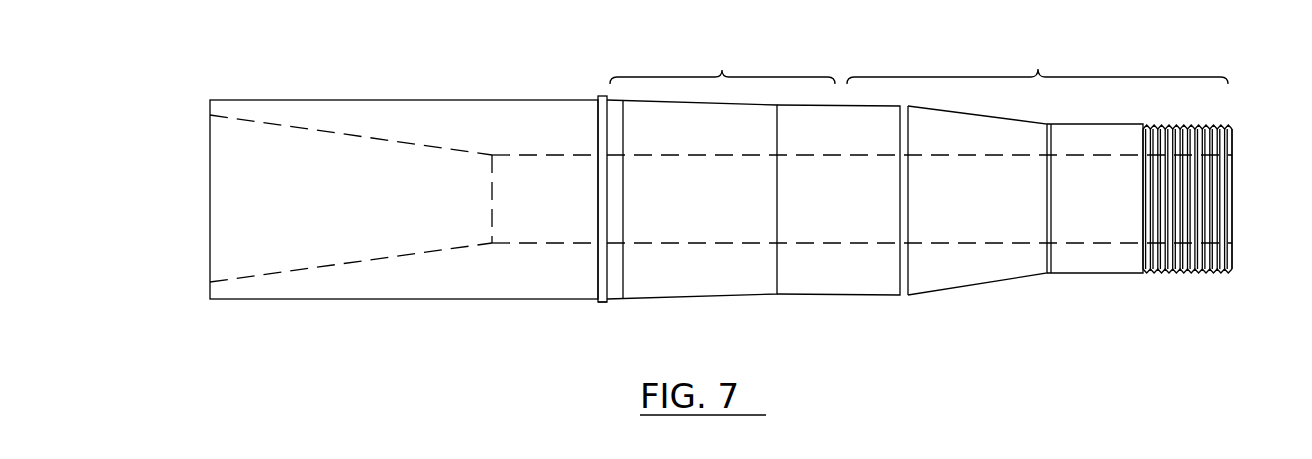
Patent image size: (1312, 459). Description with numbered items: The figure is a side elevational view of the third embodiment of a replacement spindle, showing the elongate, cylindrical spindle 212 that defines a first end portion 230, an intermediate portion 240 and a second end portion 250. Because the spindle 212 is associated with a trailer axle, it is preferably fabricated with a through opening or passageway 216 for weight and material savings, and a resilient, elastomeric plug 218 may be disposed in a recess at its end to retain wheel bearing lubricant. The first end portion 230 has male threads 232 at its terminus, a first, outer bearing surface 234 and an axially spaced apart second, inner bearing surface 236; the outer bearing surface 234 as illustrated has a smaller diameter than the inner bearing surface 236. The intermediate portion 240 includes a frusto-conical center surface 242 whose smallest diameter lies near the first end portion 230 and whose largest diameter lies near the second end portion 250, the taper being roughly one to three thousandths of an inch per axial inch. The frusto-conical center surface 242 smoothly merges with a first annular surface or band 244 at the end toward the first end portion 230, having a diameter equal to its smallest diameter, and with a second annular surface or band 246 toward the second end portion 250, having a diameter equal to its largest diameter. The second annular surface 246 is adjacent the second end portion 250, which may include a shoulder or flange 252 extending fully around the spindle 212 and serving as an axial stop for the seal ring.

The spindle 212 is at (499, 345).
The through opening or passageway 216 is at (979, 200).
The resilient, elastomeric plug 218 is at (1237, 204).
The first end portion 230 is at (1067, 208).
The male threads 232 is at (1180, 274).
The first, outer bearing surface 234 is at (1092, 276).
The second, inner bearing surface 236 is at (873, 295).
The intermediate portion 240 is at (753, 196).
The frusto-conical center surface 242 is at (713, 215).
The first annular surface or band 244 is at (858, 215).
The second annular surface or band 246 is at (617, 275).
The second end portion 250 is at (600, 95).
The shoulder or flange 252 is at (603, 303).